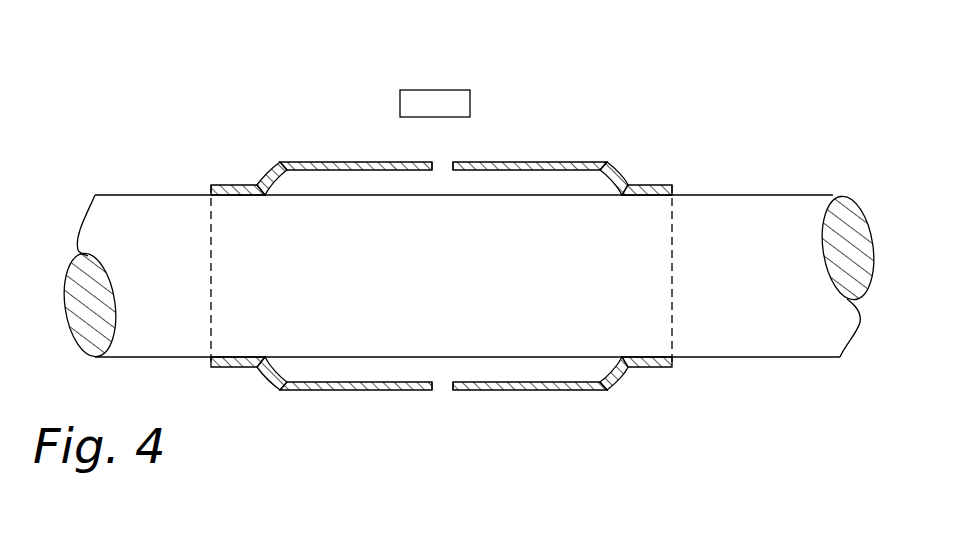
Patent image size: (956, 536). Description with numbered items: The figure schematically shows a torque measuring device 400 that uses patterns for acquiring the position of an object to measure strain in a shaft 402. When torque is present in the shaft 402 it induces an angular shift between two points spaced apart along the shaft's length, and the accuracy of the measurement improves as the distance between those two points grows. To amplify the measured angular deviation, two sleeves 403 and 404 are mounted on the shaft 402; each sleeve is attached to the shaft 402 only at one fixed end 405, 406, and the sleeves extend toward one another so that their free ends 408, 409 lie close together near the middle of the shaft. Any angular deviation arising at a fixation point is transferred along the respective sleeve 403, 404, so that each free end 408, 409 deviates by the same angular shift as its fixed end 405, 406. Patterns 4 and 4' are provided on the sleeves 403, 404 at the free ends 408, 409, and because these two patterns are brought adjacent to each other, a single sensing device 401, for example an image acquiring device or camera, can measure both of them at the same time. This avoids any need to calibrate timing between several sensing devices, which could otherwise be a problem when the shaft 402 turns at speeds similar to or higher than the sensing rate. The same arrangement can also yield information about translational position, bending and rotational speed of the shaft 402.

The pattern 4 is at (356, 214).
The pattern 4' is at (530, 215).
The torque measuring device 400 is at (250, 111).
The sensing device 401 is at (438, 98).
The shaft 402 is at (777, 227).
The sleeve 403 is at (312, 158).
The sleeve 404 is at (557, 158).
The fixed end 405 is at (242, 185).
The fixed end 406 is at (648, 184).
The free end 408 is at (430, 163).
The free end 409 is at (447, 158).